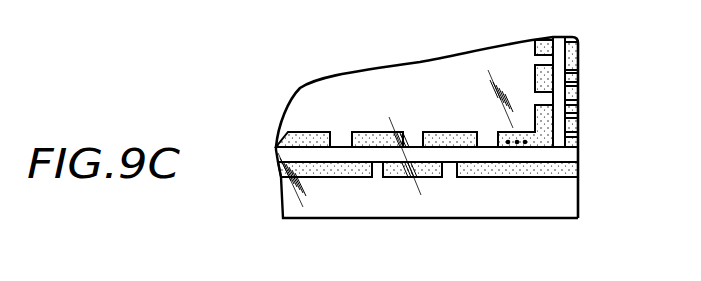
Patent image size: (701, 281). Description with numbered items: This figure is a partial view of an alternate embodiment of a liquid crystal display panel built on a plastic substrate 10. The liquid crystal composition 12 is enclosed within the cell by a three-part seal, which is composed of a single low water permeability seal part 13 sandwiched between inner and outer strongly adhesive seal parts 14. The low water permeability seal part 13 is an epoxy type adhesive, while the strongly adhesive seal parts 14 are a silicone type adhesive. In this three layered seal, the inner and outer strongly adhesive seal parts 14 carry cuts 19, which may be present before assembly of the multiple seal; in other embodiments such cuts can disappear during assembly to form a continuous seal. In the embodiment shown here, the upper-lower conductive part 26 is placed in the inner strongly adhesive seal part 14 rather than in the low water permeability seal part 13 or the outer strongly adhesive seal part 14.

The plastic substrate 10 is at (567, 204).
The liquid crystal composition 12 is at (447, 70).
The low water permeability seal part 13 is at (558, 108).
The strongly adhesive seal part 14 is at (546, 76).
The cut 19 is at (337, 138).
The upper-lower conductive part 26 is at (527, 141).